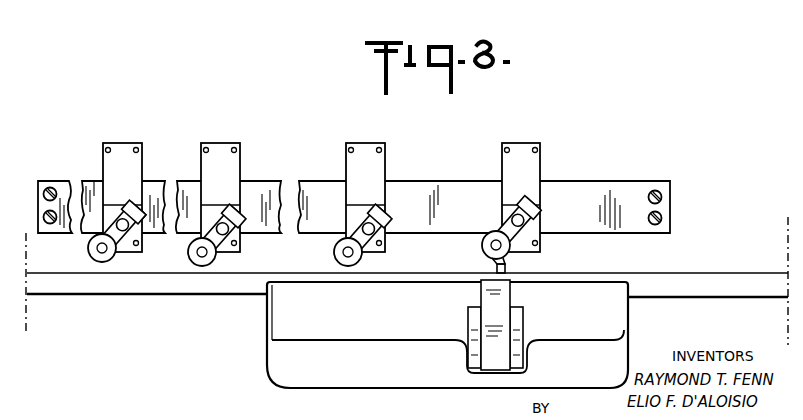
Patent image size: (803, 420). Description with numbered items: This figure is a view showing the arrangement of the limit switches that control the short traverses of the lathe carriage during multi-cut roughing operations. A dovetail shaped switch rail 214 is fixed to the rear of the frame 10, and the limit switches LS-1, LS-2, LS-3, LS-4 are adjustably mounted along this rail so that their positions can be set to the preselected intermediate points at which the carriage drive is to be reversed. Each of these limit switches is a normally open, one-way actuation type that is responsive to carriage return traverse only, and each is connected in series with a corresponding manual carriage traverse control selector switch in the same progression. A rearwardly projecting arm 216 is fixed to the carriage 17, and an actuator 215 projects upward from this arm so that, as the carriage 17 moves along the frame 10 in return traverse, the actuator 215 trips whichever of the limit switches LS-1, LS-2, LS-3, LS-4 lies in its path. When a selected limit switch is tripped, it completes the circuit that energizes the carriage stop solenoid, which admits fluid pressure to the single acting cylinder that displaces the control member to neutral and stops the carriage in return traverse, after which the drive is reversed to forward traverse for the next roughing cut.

The frame 10 is at (118, 285).
The carriage 17 is at (267, 357).
The switch rail 214 is at (277, 181).
The actuator 215 is at (506, 271).
The rearwardly projecting arm 216 is at (511, 301).
The limit switch LS-1 is at (520, 143).
The limit switch LS-2 is at (373, 130).
The limit switch LS-3 is at (228, 130).
The limit switch LS-4 is at (130, 130).